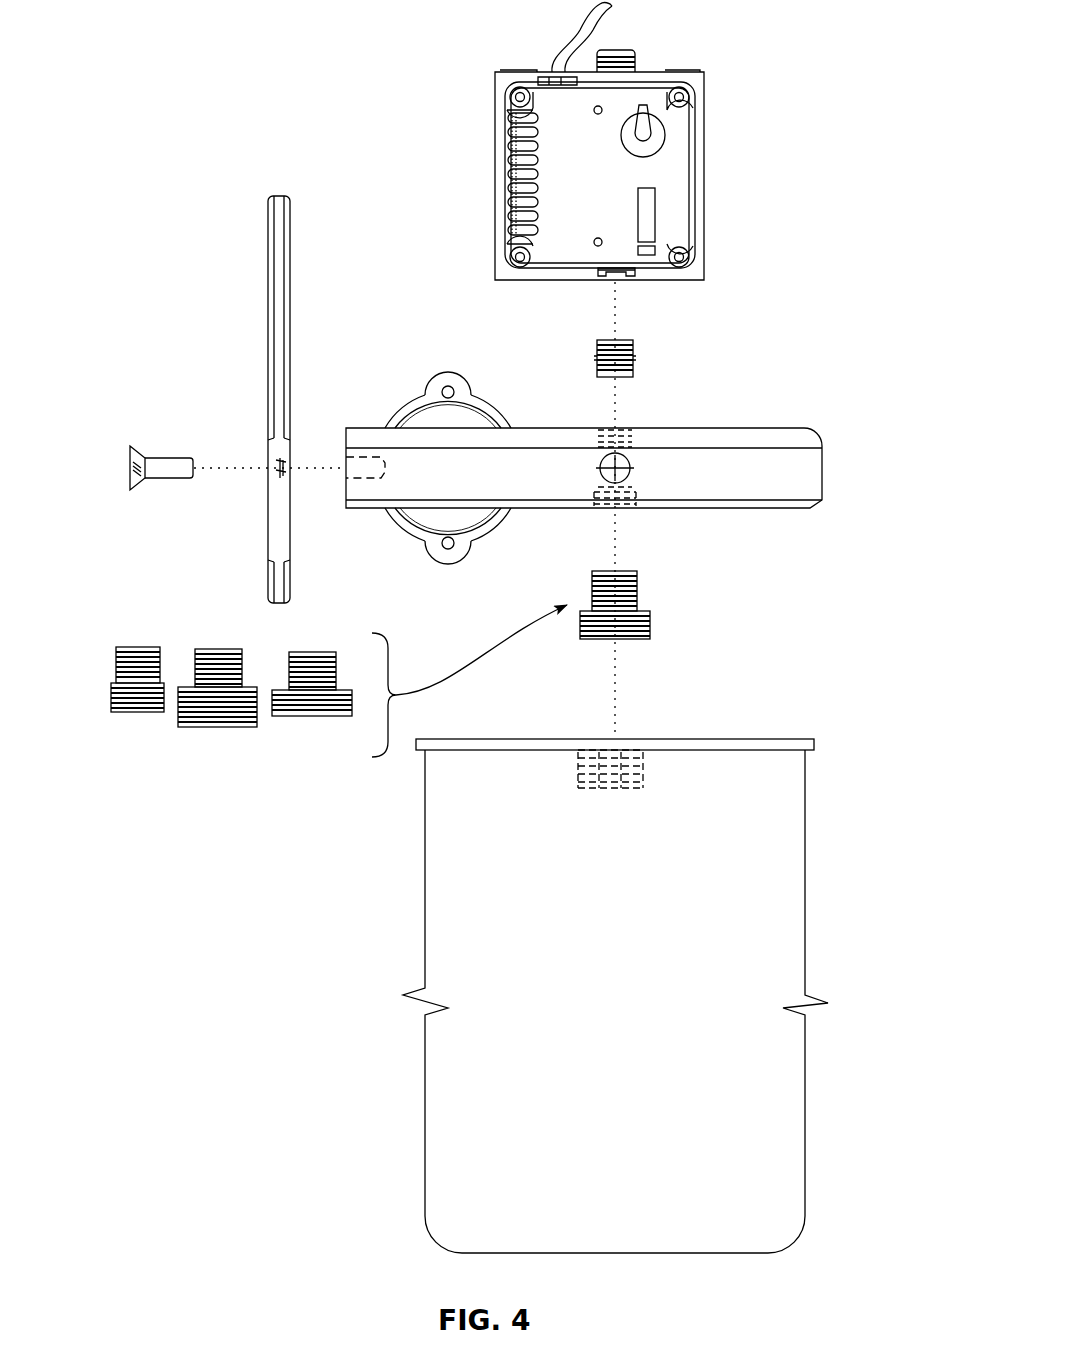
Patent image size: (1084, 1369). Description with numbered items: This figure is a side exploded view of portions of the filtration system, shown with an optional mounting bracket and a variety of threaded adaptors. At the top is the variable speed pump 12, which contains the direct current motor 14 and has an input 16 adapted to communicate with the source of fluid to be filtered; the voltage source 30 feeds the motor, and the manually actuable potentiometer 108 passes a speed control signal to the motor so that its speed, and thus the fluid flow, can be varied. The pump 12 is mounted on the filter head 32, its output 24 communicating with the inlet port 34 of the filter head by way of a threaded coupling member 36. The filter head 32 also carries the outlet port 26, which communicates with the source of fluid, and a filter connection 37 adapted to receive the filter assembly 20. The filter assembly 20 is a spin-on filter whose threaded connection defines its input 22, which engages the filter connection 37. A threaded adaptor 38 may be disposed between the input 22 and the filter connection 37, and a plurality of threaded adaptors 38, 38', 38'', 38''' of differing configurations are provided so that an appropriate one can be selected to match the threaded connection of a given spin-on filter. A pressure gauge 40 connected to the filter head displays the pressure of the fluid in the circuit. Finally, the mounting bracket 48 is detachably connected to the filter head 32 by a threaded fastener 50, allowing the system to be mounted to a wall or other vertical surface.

The variable speed pump 12 is at (488, 93).
The direct current motor 14 is at (619, 173).
The input 16 is at (640, 50).
The filter assembly 20 is at (775, 883).
The input 22 is at (622, 750).
The output 24 is at (630, 281).
The output 26 is at (628, 458).
The voltage source 30 is at (556, 55).
The filter head 32 is at (828, 430).
The inlet port 34 is at (622, 428).
The threaded coupling member 36 is at (597, 346).
The filter connection 37 is at (622, 506).
The threaded adaptor 38 is at (657, 604).
The threaded adaptor 38' is at (131, 712).
The threaded adaptor 38'' is at (217, 718).
The threaded adaptor 38''' is at (319, 713).
The pressure gauge 40 is at (440, 414).
The mounting bracket 48 is at (278, 308).
The threaded fastener 50 is at (158, 454).
The potentiometer 108 is at (667, 137).